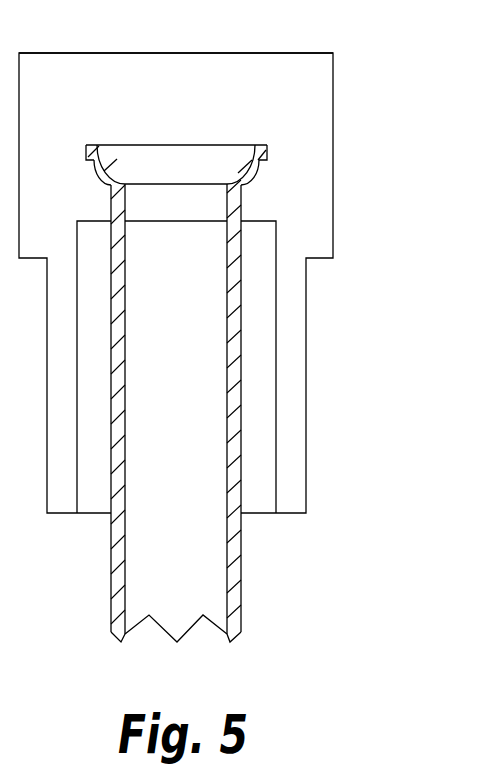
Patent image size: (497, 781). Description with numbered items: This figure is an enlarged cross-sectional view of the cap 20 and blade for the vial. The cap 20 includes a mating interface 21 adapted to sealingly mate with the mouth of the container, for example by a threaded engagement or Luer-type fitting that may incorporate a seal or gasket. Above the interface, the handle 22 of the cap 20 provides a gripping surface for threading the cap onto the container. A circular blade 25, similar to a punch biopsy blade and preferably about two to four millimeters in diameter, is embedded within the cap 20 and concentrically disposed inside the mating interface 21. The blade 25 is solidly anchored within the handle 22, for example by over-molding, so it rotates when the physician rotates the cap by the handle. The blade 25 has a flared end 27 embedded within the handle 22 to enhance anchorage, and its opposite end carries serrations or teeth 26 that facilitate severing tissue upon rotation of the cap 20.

The cap 20 is at (333, 152).
The mating interface 21 is at (306, 382).
The handle 22 is at (285, 110).
The circular blade 25 is at (242, 557).
The serrations or teeth 26 is at (218, 626).
The flared end 27 is at (250, 163).